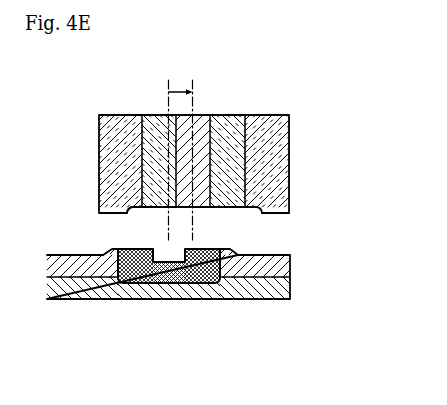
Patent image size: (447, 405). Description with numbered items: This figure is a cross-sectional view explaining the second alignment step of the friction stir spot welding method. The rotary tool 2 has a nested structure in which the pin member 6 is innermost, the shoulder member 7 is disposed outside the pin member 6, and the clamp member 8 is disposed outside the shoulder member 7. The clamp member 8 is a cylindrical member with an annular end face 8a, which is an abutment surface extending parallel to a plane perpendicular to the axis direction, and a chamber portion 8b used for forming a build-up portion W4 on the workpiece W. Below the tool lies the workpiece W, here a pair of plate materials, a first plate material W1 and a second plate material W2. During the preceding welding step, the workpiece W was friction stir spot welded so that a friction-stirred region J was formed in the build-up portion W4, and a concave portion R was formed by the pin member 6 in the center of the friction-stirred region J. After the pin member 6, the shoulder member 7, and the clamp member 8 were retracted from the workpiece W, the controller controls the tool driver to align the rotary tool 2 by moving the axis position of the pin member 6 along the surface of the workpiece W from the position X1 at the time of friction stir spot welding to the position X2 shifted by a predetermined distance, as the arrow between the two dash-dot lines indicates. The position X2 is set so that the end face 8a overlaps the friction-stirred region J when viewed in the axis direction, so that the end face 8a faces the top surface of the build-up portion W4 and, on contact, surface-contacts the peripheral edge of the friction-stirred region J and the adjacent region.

The rotary tool 2 is at (303, 127).
The pin member 6 is at (183, 127).
The shoulder member 7 is at (155, 158).
The clamp member 8 is at (103, 193).
The end face 8a is at (271, 214).
The chamber portion 8b is at (133, 214).
The position X1 is at (168, 100).
The position X2 is at (193, 100).
The workpiece W is at (348, 252).
The first plate material W1 is at (290, 268).
The second plate material W2 is at (290, 288).
The build-up portion W4 is at (232, 250).
The concave portion R is at (163, 285).
The friction-stirred region J is at (207, 282).